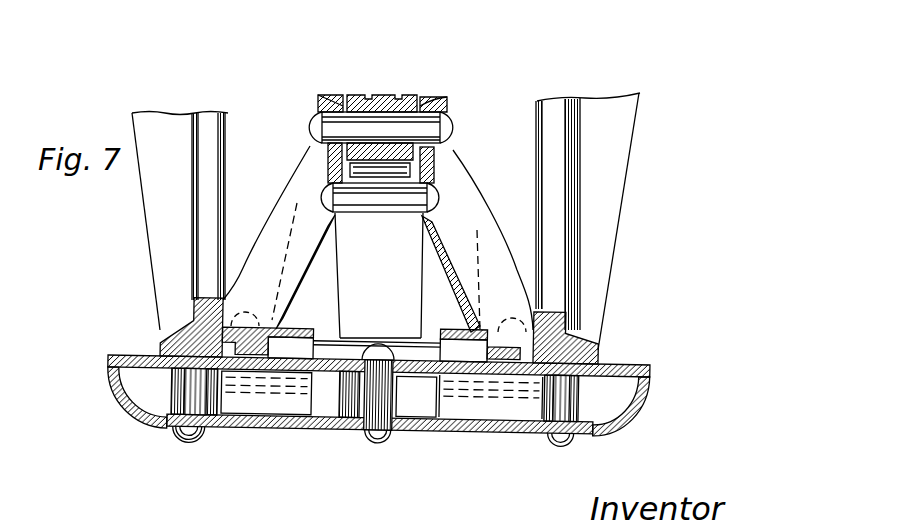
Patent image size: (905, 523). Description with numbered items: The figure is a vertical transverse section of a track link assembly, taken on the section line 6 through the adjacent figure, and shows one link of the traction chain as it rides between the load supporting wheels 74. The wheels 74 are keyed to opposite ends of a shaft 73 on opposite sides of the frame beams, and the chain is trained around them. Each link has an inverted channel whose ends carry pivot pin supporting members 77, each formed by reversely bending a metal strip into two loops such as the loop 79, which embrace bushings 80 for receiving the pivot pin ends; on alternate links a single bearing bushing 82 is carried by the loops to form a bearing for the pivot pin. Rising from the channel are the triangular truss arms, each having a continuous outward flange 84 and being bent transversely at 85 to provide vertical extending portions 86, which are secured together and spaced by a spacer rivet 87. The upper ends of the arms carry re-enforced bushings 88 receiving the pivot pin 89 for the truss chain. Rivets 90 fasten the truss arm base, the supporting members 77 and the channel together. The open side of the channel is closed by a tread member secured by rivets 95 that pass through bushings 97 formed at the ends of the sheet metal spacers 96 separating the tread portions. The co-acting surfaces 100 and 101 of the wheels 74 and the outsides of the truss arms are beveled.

The section line 6- 6 is at (365, 75).
The shaft 73 is at (190, 440).
The load supporting wheels 74 is at (651, 219).
The pivot pin supporting members 77 is at (255, 372).
The loop 79 is at (290, 329).
The bushings 80 is at (462, 331).
The bearing bushing 82 is at (347, 334).
The continuous flange 84 is at (520, 312).
The transverse bend 85 is at (330, 218).
The vertical extending portions 86 is at (328, 166).
The spacer rivet 87 is at (372, 212).
The re-enforced bushings 88 is at (341, 100).
The pivot pin 89 is at (374, 127).
The rivets 90 is at (245, 318).
The rivets 95 is at (380, 425).
The spacers 96 is at (285, 412).
The bushings 97 is at (163, 428).
The co-acting surface 100 is at (178, 327).
The co-acting surface 101 is at (210, 340).